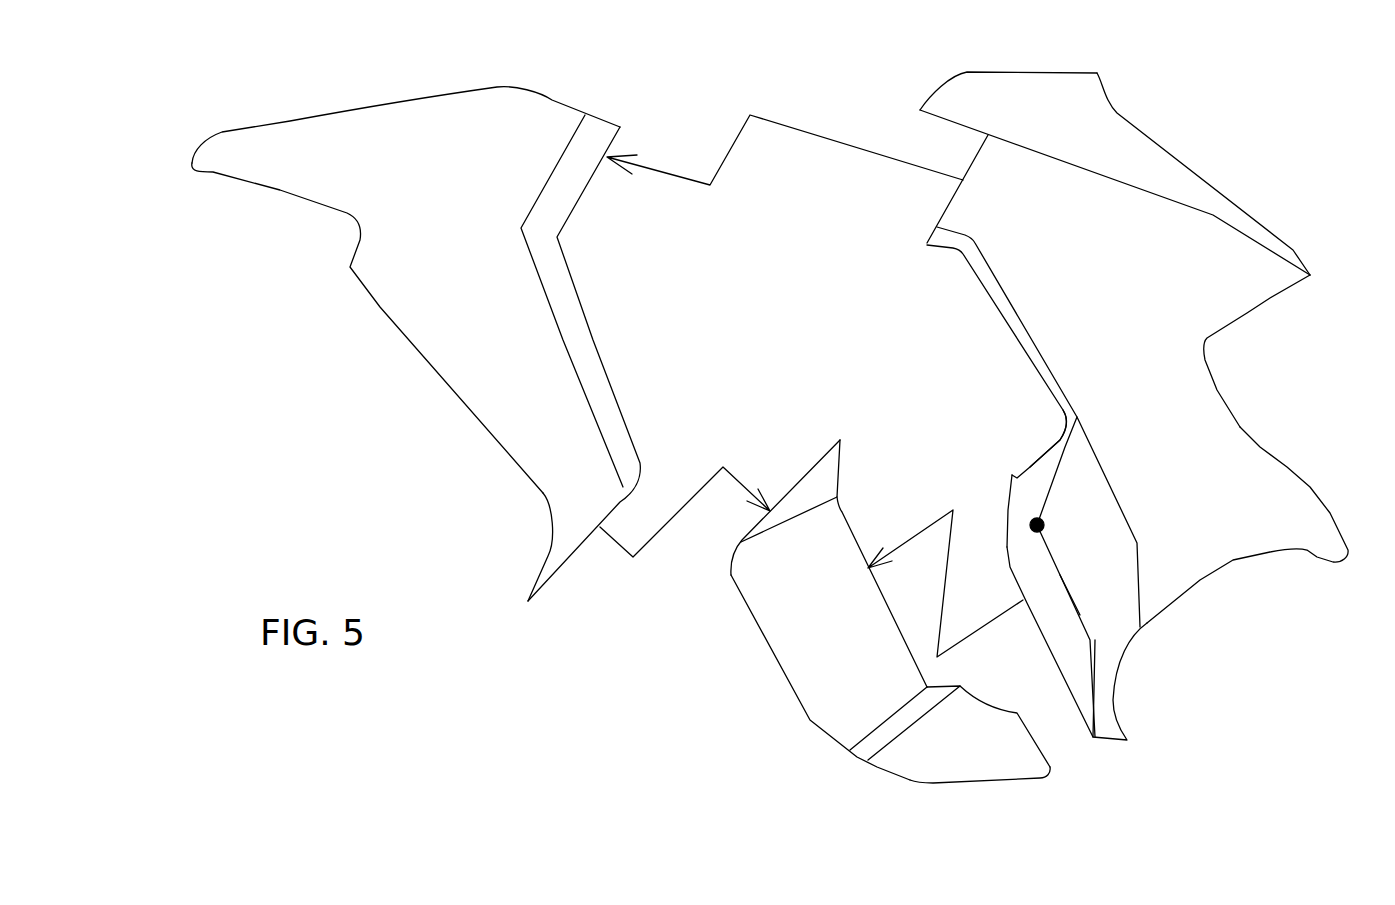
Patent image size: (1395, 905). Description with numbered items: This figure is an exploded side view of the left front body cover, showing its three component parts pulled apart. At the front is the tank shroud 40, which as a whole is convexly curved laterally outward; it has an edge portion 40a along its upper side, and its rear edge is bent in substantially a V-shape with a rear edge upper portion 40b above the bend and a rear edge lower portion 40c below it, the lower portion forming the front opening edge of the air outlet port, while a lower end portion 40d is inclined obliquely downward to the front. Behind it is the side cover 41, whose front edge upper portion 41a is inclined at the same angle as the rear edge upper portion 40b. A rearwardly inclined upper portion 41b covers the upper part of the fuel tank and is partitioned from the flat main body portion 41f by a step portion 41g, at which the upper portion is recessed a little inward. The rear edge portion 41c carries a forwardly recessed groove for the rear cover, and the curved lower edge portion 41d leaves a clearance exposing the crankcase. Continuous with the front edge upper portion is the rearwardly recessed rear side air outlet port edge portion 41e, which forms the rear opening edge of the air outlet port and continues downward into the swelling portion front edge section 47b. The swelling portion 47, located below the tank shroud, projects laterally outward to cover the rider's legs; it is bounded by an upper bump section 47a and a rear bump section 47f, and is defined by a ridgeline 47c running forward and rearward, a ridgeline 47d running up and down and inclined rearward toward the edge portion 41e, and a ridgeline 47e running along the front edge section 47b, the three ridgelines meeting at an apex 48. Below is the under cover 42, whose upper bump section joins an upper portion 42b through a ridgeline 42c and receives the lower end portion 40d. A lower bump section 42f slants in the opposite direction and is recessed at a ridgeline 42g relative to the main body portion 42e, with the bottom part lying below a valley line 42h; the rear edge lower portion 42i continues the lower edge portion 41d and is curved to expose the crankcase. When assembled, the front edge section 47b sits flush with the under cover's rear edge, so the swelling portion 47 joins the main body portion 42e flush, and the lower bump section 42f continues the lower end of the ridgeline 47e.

The tank shroud 40 is at (449, 366).
The upper edge portion of first cover 40a is at (291, 128).
The rear edge upper portion 40b is at (623, 131).
The rear edge lower portion 40c is at (580, 316).
The lower end portion 40d is at (543, 572).
The side cover 41 is at (1107, 388).
The front edge upper portion 41a is at (953, 197).
The upper portion 41b is at (1130, 141).
The rear edge portion 41c is at (1247, 313).
The lower edge portion 41d is at (1113, 707).
The rear side air outlet port edge portion 41e is at (992, 302).
The main body portion 41f is at (1225, 456).
The step portion 41g is at (1180, 203).
The under cover 42 is at (847, 626).
The upper portion 42b is at (771, 592).
The ridgeline 42c is at (737, 560).
The main body portion 42e is at (766, 648).
The lower bump section 42f is at (863, 740).
The ridgeline 42g is at (873, 722).
The valley line 42h is at (903, 727).
The rear edge lower portion 42i is at (1005, 714).
The swelling portion 47 is at (1138, 553).
The upper bump section 47a is at (1012, 482).
The swelling portion front edge section 47b is at (1053, 658).
The ridgeline 47c is at (1018, 535).
The ridgeline 47d is at (1057, 443).
The ridgeline 47e is at (1078, 608).
The rear bump section 47f is at (1127, 547).
The apex 48 is at (1032, 523).